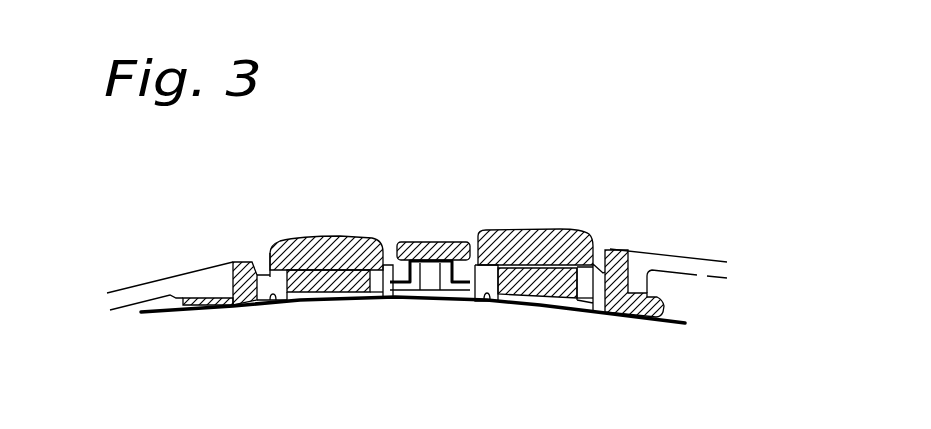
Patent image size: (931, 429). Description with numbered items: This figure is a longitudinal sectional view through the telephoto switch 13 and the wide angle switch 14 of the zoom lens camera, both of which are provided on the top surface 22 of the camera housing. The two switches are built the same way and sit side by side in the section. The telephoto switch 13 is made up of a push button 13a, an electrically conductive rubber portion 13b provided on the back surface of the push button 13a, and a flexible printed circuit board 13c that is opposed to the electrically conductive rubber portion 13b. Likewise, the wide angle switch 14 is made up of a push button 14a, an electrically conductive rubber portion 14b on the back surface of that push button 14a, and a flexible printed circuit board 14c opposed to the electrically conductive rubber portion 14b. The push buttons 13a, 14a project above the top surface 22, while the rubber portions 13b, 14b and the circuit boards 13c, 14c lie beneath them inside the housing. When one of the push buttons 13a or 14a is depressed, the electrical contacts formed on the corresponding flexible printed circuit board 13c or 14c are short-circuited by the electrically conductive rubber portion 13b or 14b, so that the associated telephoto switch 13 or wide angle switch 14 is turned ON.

The telephoto switch 13 is at (287, 238).
The push button 13a is at (330, 237).
The electrically conductive rubber portion 13b is at (370, 283).
The flexible printed circuit board 13c is at (272, 300).
The wide angle switch 14 is at (500, 226).
The push button 14a is at (531, 229).
The electrically conductive rubber portion 14b is at (577, 283).
The flexible printed circuit board 14c is at (487, 300).
The top surface 22 is at (178, 275).